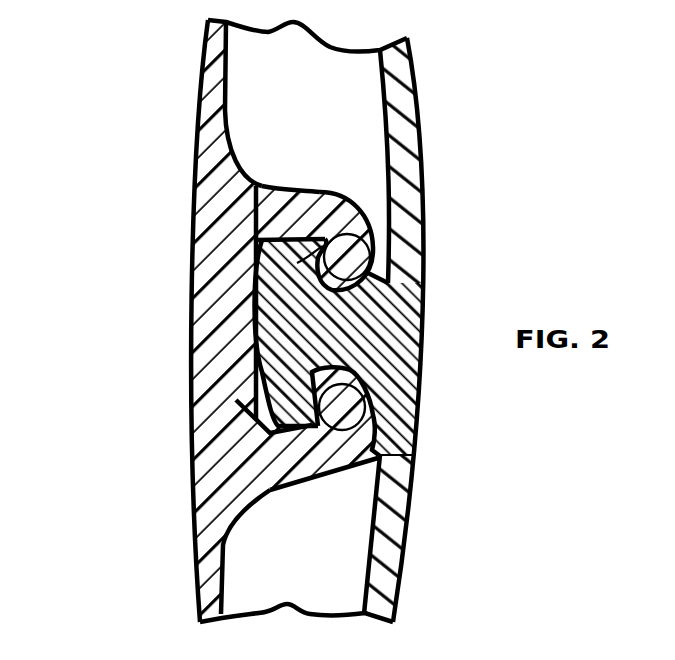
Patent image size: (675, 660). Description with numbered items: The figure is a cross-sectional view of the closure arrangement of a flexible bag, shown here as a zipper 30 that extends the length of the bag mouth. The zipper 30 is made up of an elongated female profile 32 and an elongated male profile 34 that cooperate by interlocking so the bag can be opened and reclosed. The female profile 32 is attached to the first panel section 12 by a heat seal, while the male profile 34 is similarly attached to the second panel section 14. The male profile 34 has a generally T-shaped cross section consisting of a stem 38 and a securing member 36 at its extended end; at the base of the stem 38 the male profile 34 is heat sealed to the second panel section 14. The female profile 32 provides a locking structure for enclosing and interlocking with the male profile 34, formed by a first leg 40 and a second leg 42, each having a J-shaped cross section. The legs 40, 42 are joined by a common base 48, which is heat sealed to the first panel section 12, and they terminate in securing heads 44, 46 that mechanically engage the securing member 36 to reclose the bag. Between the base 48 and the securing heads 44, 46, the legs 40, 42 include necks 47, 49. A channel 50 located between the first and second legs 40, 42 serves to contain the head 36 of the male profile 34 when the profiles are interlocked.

The first panel section 12 is at (207, 55).
The second panel section 14 is at (395, 582).
The zipper 30 is at (98, 270).
The female profile 32 is at (177, 218).
The male profile 34 is at (476, 426).
The securing member 36 is at (258, 192).
The stem 38 is at (308, 328).
The first leg 40 is at (347, 213).
The second leg 42 is at (260, 463).
The securing head 44 is at (330, 243).
The securing head 46 is at (315, 430).
The neck 47 is at (295, 193).
The common base 48 is at (255, 330).
The neck 49 is at (337, 460).
The channel 50 is at (254, 362).